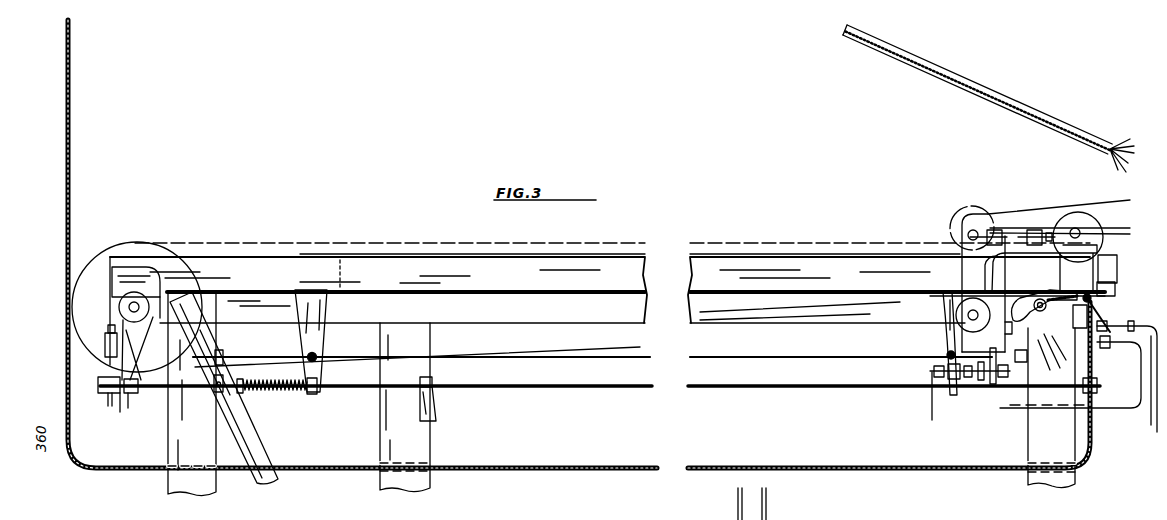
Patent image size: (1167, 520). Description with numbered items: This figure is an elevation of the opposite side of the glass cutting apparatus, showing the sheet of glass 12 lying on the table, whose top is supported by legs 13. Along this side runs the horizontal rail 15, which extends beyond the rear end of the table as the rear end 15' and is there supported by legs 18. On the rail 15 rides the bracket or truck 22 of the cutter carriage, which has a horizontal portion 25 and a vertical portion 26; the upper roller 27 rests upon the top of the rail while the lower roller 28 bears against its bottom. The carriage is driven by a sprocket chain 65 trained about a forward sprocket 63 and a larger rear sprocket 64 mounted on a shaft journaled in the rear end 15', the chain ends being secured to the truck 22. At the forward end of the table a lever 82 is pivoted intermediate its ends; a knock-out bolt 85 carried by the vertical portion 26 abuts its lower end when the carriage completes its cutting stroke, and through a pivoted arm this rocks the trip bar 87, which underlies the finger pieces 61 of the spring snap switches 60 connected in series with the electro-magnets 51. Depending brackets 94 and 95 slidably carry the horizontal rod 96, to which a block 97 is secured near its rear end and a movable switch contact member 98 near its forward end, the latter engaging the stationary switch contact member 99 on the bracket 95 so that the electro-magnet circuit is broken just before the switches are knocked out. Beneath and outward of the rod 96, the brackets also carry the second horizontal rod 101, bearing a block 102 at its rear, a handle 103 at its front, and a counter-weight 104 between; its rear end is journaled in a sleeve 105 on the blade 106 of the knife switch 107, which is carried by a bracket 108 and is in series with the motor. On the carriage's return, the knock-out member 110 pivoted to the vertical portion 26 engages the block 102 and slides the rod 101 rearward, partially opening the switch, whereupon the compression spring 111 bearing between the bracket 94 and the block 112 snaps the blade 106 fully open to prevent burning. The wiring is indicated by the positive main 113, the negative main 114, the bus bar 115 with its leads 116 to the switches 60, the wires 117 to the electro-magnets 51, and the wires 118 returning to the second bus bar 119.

The sheet of glass 12 is at (644, 262).
The legs 13 is at (412, 452).
The horizontal rail 15 is at (889, 271).
The rear end of rail 15' is at (378, 292).
The legs 18 is at (180, 402).
The bracket or truck 22 is at (1020, 216).
The horizontal portion 25 is at (1075, 220).
The vertical portion 26 is at (968, 266).
The upper roller 27 is at (964, 220).
The lower roller 28 is at (960, 316).
The electro-magnets 51 is at (619, 514).
The spring snap switches 60 is at (714, 519).
The finger pieces 61 is at (1110, 284).
The sprockets 63 is at (1100, 255).
The sprockets 64 is at (140, 243).
The sprocket chain 65 is at (470, 244).
The lever 82 is at (1050, 280).
The knock-out bolt 85 is at (1015, 341).
The trip bar 87 is at (1106, 300).
The depending bracket 94 is at (322, 352).
The depending bracket 95 is at (942, 336).
The horizontal rod 96 is at (712, 354).
The block 97 is at (226, 354).
The movable switch contact member 98 is at (997, 388).
The stationary switch contact member 99 is at (966, 380).
The second horizontal rod 101 is at (605, 392).
The block 102 is at (222, 392).
The handle 103 is at (1098, 384).
The counter-weight 104 is at (436, 408).
The sleeve 105 is at (124, 394).
The blade 106 is at (108, 366).
The knife switch 107 is at (115, 322).
The bracket 108 is at (130, 322).
The knock-out member 110 is at (980, 386).
The compression spring 111 is at (306, 392).
The block 112 is at (250, 374).
The positive main 113 is at (1150, 420).
The negative main 114 is at (930, 400).
The bus bar 115 is at (1112, 322).
The leads 116 is at (729, 504).
The wires 117 is at (674, 519).
The wires 118 is at (1116, 348).
The second bus bar 119 is at (1067, 378).